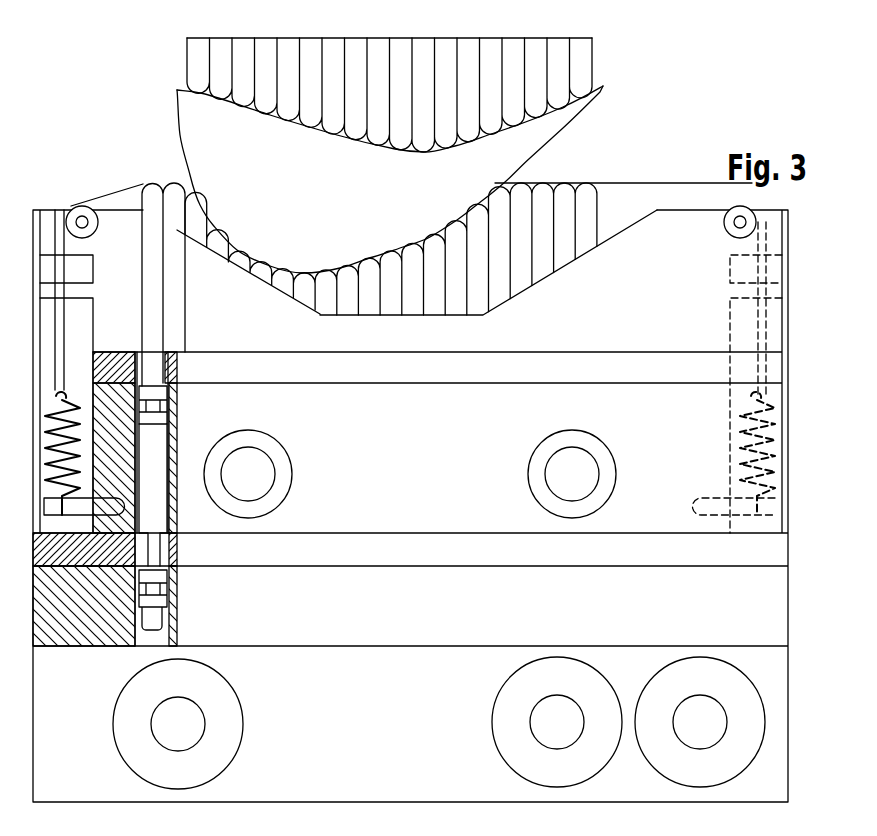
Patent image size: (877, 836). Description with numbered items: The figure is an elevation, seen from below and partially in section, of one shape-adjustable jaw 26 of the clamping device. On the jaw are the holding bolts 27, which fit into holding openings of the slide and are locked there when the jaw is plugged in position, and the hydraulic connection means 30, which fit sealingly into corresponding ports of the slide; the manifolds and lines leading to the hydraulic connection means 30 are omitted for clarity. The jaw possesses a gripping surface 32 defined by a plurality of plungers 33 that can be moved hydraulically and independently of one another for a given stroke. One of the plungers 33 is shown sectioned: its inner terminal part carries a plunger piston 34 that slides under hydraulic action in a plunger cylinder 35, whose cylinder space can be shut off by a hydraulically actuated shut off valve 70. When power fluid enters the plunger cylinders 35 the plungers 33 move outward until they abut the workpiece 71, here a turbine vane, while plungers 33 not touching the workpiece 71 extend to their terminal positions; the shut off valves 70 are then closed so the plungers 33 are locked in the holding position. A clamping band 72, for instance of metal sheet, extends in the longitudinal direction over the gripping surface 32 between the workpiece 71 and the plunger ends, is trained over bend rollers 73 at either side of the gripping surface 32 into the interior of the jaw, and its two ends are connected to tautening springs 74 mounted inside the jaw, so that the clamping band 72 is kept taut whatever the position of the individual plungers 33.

The shape-adjustable jaw 26 is at (775, 765).
The holding bolt 27 is at (275, 471).
The hydraulic connection means 30 is at (205, 722).
The gripping surface 32 is at (533, 176).
The plunger 33 is at (173, 191).
The plunger piston 34 is at (160, 393).
The plunger cylinder 35 is at (150, 507).
The shut off valve 70 is at (162, 590).
The workpiece 71 is at (187, 107).
The clamping band 72 is at (670, 194).
The bend roller 73 is at (92, 229).
The tautening spring 74 is at (44, 469).